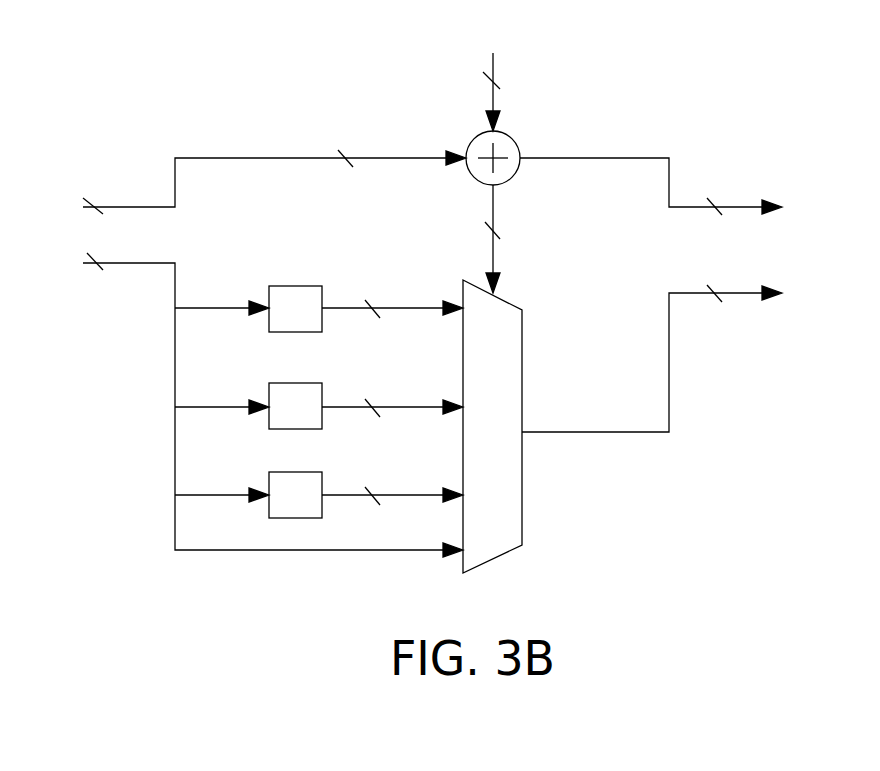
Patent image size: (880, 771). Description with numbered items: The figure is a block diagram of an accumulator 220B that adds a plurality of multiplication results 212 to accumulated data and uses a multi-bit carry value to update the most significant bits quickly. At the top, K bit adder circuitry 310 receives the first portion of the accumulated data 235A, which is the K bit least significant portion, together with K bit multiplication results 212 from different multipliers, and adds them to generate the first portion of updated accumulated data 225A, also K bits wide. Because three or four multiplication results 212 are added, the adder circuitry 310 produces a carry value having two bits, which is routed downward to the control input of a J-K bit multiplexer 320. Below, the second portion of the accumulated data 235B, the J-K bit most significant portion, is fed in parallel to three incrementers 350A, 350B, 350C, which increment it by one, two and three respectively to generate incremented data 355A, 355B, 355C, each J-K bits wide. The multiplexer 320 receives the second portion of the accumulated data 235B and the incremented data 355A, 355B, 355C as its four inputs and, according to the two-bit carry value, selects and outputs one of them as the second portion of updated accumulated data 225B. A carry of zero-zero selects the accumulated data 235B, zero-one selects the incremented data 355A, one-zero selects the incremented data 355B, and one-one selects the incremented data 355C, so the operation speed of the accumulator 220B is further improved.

The accumulator 220B is at (97, 27).
The multiplication result 212 is at (500, 80).
The K bit adder circuitry 310 is at (513, 138).
The first portion of the accumulated data 235A is at (175, 156).
The first portion of updated accumulated data 225A is at (669, 156).
The J-K bit multiplexer 320 is at (513, 367).
The second portion of the accumulated data 235B is at (175, 553).
The incrementer 350A is at (305, 472).
The incrementer 350B is at (305, 383).
The incrementer 350C is at (305, 286).
The incremented data 355A is at (424, 497).
The incremented data 355B is at (424, 409).
The incremented data 355C is at (424, 310).
The second portion of updated accumulated data 225B is at (669, 437).